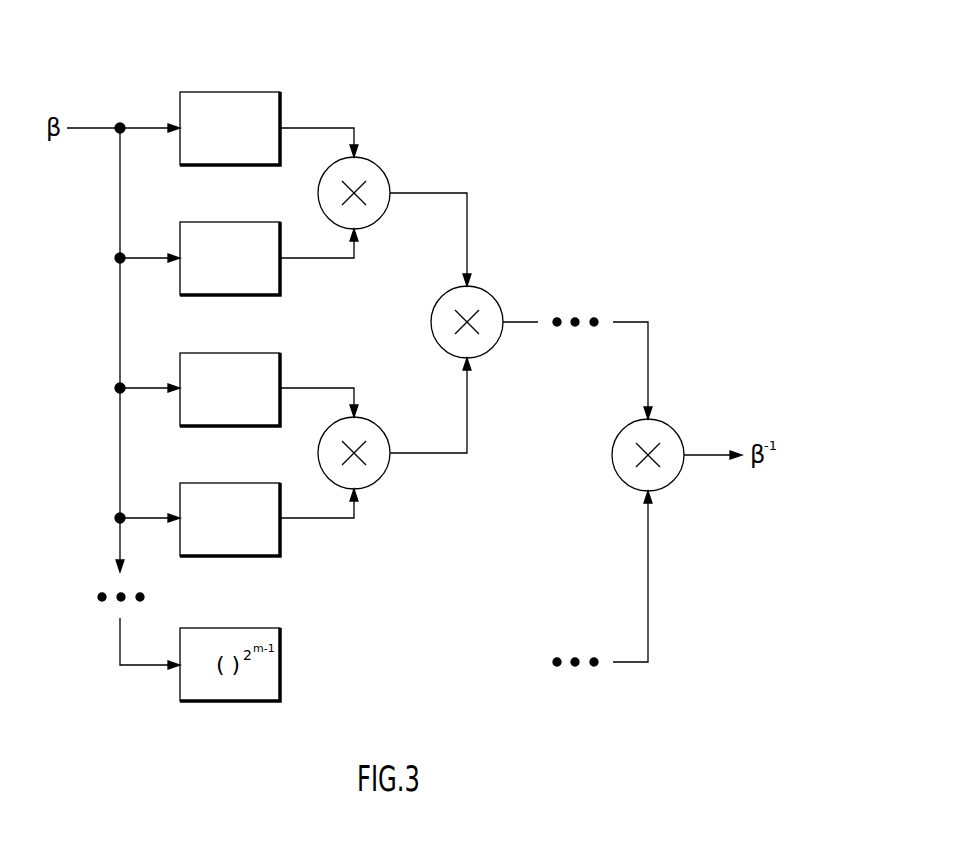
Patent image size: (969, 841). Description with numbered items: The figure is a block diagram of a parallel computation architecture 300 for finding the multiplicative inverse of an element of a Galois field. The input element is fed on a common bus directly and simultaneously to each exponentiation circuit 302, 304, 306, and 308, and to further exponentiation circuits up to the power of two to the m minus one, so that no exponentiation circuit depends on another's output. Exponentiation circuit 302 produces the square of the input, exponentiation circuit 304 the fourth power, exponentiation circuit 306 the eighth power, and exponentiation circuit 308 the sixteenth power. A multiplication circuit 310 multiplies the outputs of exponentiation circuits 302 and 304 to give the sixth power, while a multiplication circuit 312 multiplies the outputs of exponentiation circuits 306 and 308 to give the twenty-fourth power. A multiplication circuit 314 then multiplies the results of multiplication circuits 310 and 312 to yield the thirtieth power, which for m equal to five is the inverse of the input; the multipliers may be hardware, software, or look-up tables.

The parallel computation architecture 300 is at (532, 70).
The exponentiation circuit 302 is at (257, 91).
The exponentiation circuit 304 is at (230, 222).
The exponentiation circuit 306 is at (232, 353).
The exponentiation circuit 308 is at (230, 483).
The multiplication circuit 310 is at (380, 162).
The multiplication circuit 312 is at (378, 422).
The multiplication circuit 314 is at (488, 287).